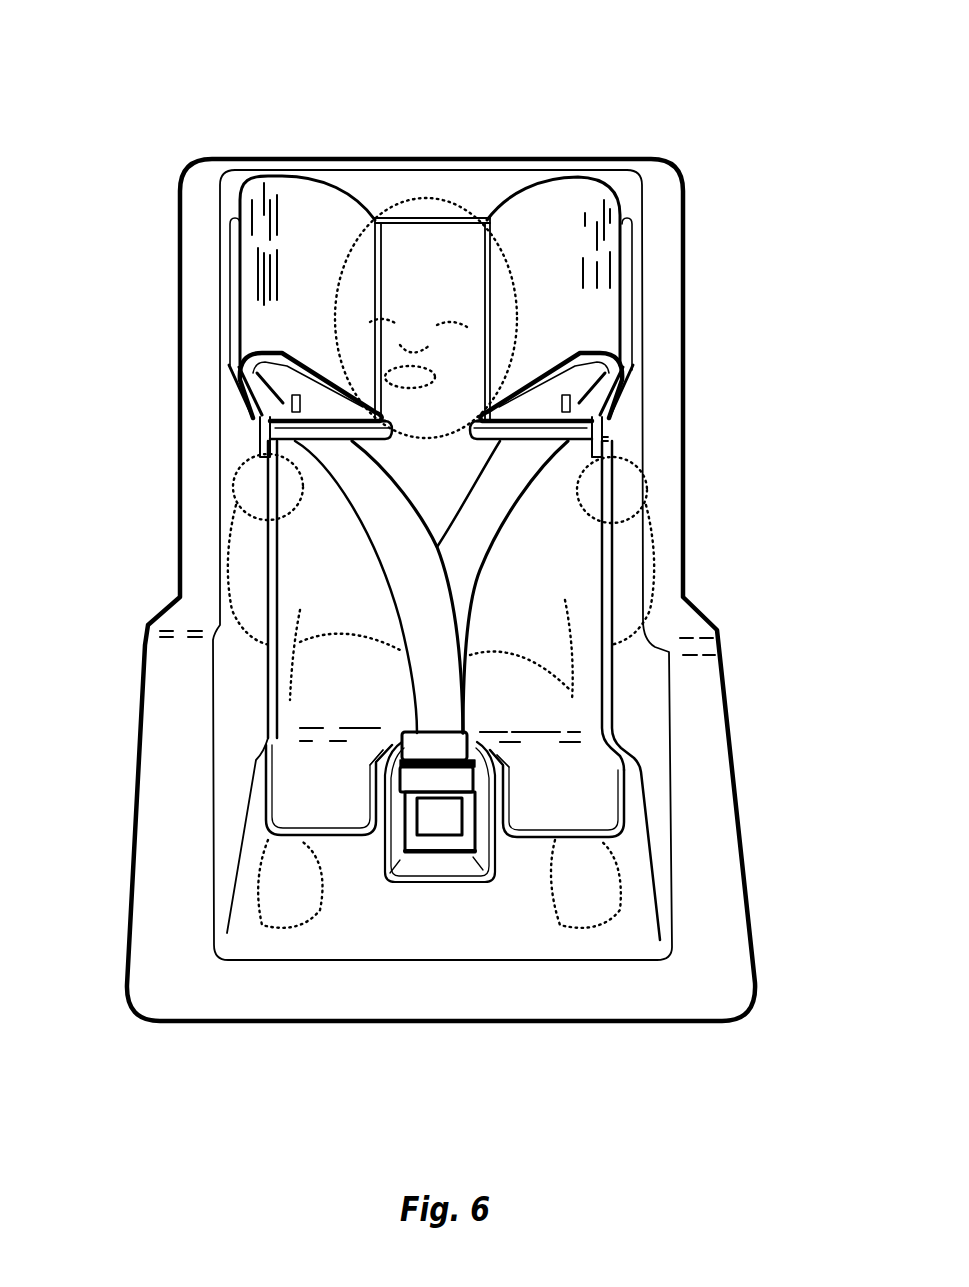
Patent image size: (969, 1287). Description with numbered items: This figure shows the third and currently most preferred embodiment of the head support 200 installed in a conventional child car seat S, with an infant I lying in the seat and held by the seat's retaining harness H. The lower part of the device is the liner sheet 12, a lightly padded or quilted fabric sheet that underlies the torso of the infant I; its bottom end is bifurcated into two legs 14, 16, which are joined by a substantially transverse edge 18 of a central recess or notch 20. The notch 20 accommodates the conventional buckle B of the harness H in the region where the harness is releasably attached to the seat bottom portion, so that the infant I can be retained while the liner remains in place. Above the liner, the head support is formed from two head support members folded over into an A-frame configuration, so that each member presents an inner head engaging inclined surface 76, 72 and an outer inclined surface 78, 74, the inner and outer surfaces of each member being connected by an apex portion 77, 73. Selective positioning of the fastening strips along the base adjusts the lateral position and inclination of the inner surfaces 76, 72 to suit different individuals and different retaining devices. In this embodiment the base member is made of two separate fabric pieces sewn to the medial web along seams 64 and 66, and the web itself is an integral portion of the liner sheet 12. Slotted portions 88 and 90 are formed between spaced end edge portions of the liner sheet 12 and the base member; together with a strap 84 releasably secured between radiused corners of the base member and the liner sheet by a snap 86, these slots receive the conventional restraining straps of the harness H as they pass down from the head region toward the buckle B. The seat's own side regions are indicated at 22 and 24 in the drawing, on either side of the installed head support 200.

The head support 200 is at (140, 572).
The child car seat S is at (218, 158).
The liner sheet 12 is at (544, 598).
The leg 14 is at (336, 803).
The leg 16 is at (584, 803).
The transverse edge 18 is at (470, 733).
The central recess or notch 20 is at (398, 808).
The left side panel 22 is at (253, 643).
The right side panel 24 is at (613, 653).
The seam 64 is at (382, 213).
The seam 66 is at (488, 213).
The inner inclined surface 72 is at (528, 227).
The apex portion 73 is at (623, 270).
The outer inclined surface 74 is at (610, 403).
The inner inclined surface 76 is at (320, 210).
The apex portion 77 is at (240, 253).
The outer inclined surface 78 is at (243, 395).
The strap 84 is at (604, 437).
The snap 86 is at (604, 457).
The slotted portion 88 is at (290, 433).
The slotted portion 90 is at (558, 452).
The harness H is at (413, 592).
The buckle B is at (445, 815).
The infant I is at (283, 870).